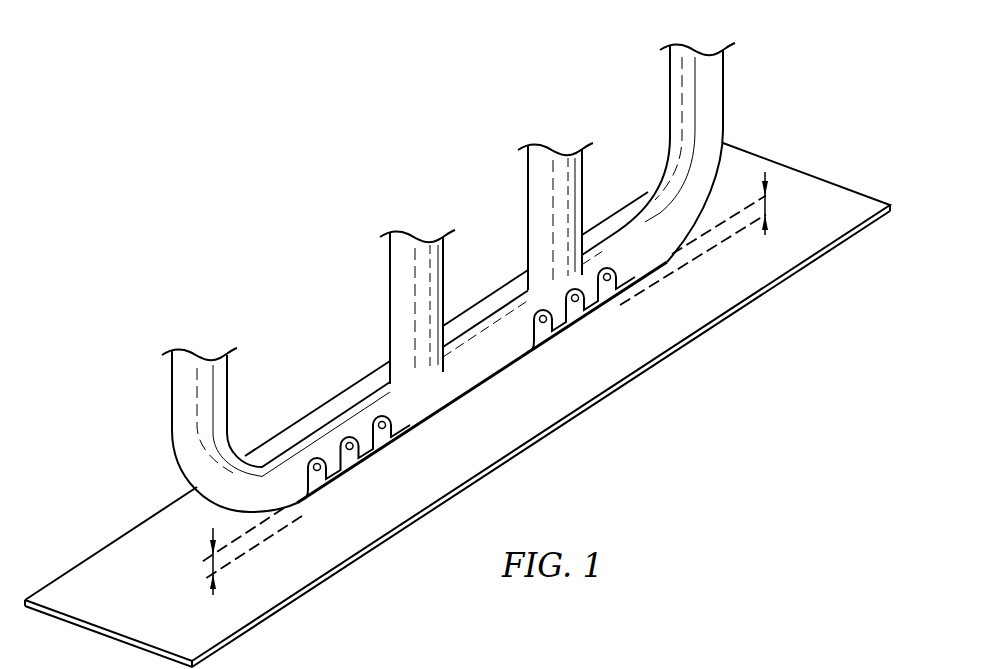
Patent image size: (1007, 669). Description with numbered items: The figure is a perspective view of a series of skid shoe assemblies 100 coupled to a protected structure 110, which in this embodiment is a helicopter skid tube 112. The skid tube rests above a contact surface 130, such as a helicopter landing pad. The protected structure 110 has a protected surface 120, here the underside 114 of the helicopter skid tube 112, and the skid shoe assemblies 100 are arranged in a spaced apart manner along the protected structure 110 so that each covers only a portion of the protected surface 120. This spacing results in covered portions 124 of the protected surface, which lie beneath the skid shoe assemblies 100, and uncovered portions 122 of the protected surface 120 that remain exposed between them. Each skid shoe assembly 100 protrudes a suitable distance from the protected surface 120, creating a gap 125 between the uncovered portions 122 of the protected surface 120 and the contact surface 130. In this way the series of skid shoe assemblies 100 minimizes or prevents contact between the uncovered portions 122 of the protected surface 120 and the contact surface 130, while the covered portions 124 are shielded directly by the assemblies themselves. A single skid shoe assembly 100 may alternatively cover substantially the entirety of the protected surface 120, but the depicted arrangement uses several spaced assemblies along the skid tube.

The skid shoe assembly 100 is at (345, 471).
The protected structure 110 is at (392, 277).
The helicopter skid tube 112 is at (173, 417).
The underside 114 is at (423, 423).
The protected surface 120 is at (457, 405).
The uncovered portions 122 is at (283, 515).
The covered portions 124 is at (304, 499).
The gap 125 is at (210, 565).
The contact surface 130 is at (270, 594).